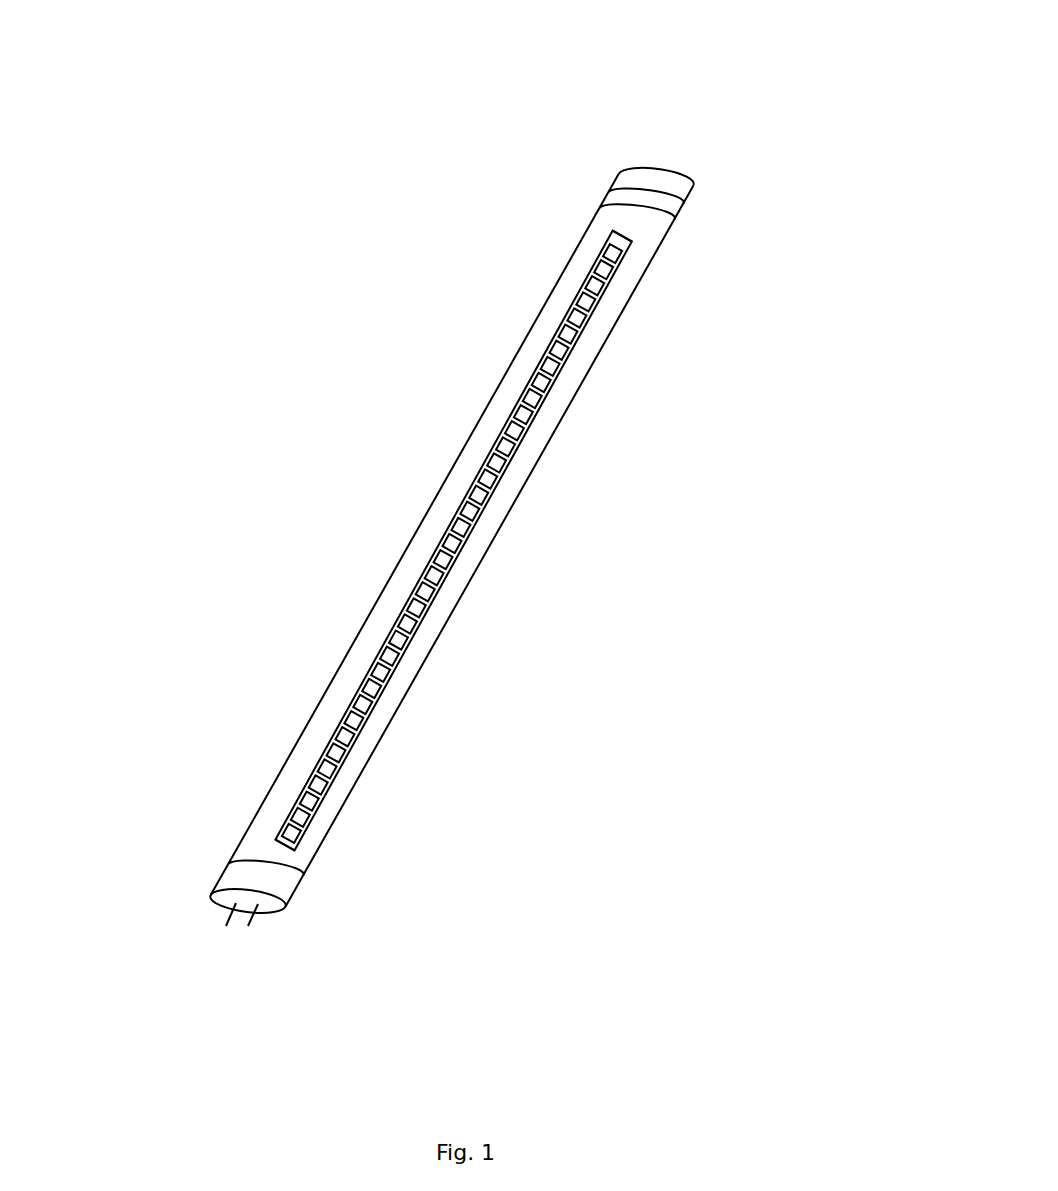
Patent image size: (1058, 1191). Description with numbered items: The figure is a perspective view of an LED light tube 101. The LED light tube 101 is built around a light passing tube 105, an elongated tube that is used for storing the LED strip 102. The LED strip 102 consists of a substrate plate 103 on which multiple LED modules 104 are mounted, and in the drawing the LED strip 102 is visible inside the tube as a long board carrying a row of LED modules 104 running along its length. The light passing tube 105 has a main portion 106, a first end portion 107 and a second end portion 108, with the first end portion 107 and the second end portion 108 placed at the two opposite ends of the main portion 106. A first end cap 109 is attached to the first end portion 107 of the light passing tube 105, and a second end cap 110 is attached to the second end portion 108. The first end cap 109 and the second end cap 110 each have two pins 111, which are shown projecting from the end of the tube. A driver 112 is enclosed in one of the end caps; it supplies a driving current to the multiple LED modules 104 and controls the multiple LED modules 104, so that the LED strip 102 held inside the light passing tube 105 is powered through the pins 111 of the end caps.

The LED light tube 101 is at (267, 916).
The LED strip 102 is at (420, 620).
The substrate plate 103 is at (625, 244).
The LED modules 104 is at (523, 418).
The light passing tube 105 is at (603, 227).
The main portion 106 is at (462, 474).
The first end portion 107 is at (575, 258).
The second end portion 108 is at (260, 842).
The first end cap 109 is at (658, 182).
The second end cap 110 is at (273, 885).
The pins 111 is at (237, 913).
The driver 112 is at (247, 860).